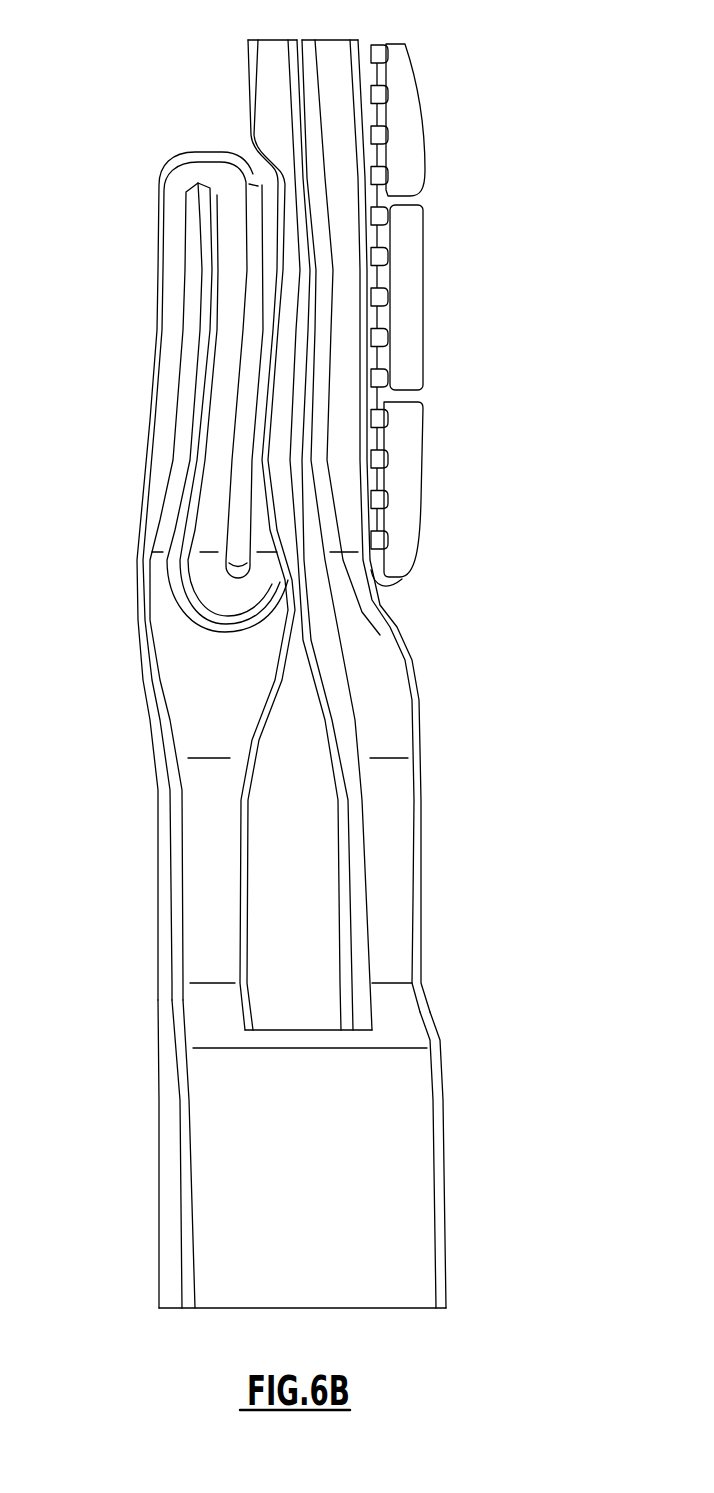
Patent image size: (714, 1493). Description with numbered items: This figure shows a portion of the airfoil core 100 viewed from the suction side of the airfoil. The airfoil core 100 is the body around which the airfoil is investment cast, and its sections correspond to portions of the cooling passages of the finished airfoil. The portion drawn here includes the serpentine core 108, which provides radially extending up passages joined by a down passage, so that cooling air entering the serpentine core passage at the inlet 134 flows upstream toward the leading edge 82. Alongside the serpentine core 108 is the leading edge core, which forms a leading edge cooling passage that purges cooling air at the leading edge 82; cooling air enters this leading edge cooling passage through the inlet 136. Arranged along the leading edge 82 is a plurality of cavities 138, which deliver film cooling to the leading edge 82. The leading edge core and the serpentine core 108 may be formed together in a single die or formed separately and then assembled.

The leading edge 82 is at (425, 315).
The airfoil core 100 is at (370, 199).
The serpentine core 108 is at (150, 463).
The inlet 134 is at (207, 1013).
The inlet 136 is at (437, 1027).
The cavities 138 is at (418, 127).